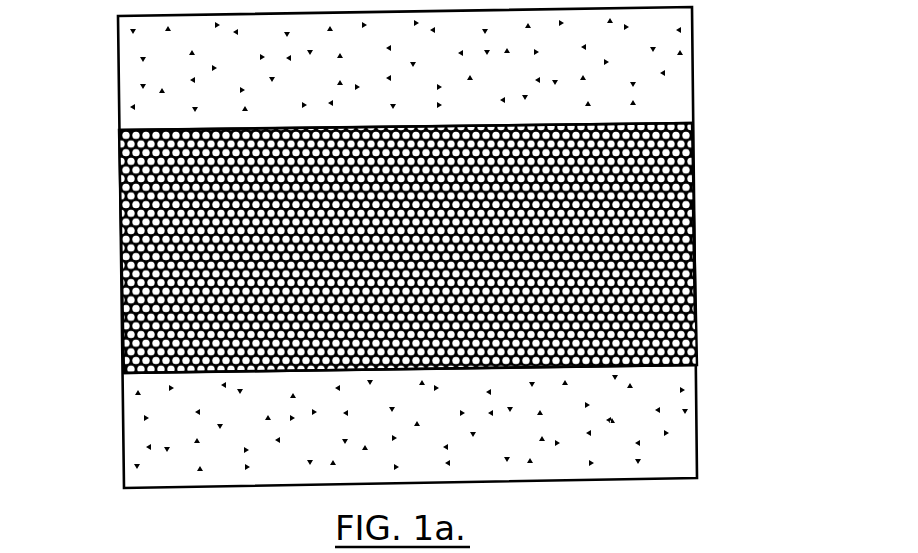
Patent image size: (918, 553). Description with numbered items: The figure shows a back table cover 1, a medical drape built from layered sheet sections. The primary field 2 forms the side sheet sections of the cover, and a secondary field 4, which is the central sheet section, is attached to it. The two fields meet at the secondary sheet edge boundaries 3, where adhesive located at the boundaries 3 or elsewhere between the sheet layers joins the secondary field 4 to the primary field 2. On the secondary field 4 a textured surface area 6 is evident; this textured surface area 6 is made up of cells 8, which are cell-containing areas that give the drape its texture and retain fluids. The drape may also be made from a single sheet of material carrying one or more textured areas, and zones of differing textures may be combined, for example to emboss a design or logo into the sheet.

The back table cover 1 is at (58, 277).
The primary field 2 is at (670, 83).
The secondary sheet edge boundaries 3 is at (692, 122).
The secondary field 4 is at (675, 195).
The textured surface area 6 is at (694, 279).
The cells 8 is at (694, 231).